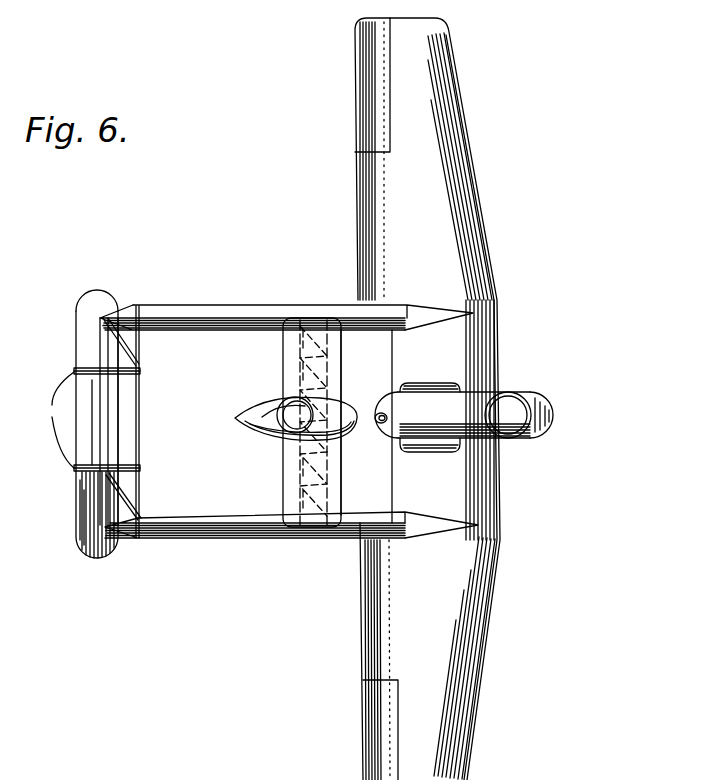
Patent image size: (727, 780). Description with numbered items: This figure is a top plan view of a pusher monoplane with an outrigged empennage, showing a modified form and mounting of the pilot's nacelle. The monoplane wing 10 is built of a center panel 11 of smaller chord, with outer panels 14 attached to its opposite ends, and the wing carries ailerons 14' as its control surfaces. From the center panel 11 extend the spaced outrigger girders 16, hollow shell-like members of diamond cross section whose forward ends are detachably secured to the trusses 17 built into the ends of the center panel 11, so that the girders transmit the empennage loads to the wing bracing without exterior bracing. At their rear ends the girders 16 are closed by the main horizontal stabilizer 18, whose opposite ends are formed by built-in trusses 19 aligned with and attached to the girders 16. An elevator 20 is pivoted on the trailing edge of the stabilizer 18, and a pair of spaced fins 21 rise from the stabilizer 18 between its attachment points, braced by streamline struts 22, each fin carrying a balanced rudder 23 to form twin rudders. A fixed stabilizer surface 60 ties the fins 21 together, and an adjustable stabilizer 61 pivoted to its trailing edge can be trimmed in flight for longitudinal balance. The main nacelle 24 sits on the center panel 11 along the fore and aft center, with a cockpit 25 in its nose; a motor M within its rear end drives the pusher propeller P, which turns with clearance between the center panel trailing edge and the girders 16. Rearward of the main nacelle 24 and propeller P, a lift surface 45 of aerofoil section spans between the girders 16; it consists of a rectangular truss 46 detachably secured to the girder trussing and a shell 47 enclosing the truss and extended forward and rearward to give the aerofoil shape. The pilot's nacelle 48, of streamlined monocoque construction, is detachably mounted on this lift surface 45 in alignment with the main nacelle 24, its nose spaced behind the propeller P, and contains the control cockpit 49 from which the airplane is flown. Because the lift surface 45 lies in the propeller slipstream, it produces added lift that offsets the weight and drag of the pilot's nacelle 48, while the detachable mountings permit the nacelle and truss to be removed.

The monoplane wing 10 is at (356, 206).
The center panel 11 is at (497, 357).
The outer panels 14 is at (483, 658).
The ailerons 14' is at (357, 399).
The outrigger girders 16 is at (212, 310).
The trusses 17 is at (416, 518).
The main horizontal stabilizer 18 is at (128, 407).
The built-in trusses 19 is at (118, 312).
The elevator 20 is at (100, 294).
The fins 21 is at (140, 372).
The streamline struts 22 is at (125, 348).
The rudder 23 is at (46, 420).
The main nacelle 24 is at (513, 403).
The cockpit 25 is at (508, 415).
The lift surface 45 is at (284, 362).
The truss 46 is at (310, 486).
The shell 47 is at (337, 475).
The pilot's nacelle 48 is at (245, 428).
The control cockpit 49 is at (290, 410).
The fixed stabilizer surface 60 is at (113, 438).
The adjustable stabilizer 61 is at (98, 417).
The motor M is at (414, 395).
The pusher propeller P is at (379, 413).